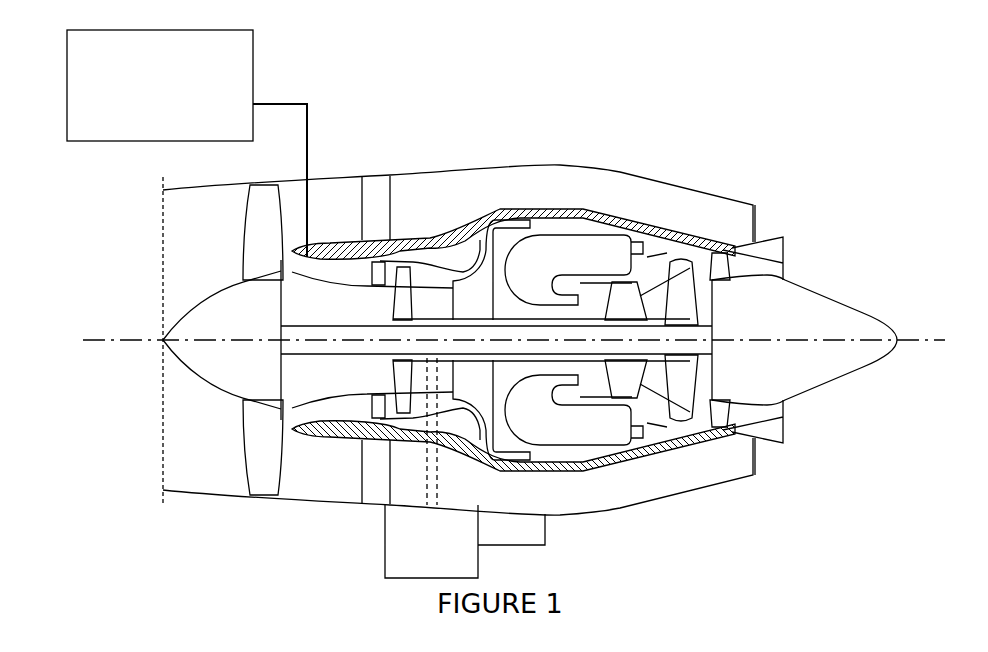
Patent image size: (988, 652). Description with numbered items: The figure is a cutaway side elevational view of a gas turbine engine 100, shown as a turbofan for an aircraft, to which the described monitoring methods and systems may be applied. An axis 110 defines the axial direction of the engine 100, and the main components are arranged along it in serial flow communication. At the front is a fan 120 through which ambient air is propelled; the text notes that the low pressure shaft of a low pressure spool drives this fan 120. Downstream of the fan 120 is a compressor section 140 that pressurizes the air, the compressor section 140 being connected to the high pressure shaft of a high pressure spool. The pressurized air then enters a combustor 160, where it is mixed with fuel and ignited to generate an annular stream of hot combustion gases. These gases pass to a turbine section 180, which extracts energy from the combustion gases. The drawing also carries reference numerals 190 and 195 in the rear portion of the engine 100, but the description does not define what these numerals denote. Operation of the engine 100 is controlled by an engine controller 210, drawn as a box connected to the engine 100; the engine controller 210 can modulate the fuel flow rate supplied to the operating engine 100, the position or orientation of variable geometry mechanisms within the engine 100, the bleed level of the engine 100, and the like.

The gas turbine engine 100 is at (667, 133).
The axis 110 is at (105, 335).
The fan 120 is at (260, 440).
The compressor section 140 is at (430, 270).
The combustor 160 is at (568, 248).
The turbine section 180 is at (658, 448).
The exhaust section 190 is at (690, 262).
The turbine section 195 is at (625, 292).
The engine controller 210 is at (143, 106).